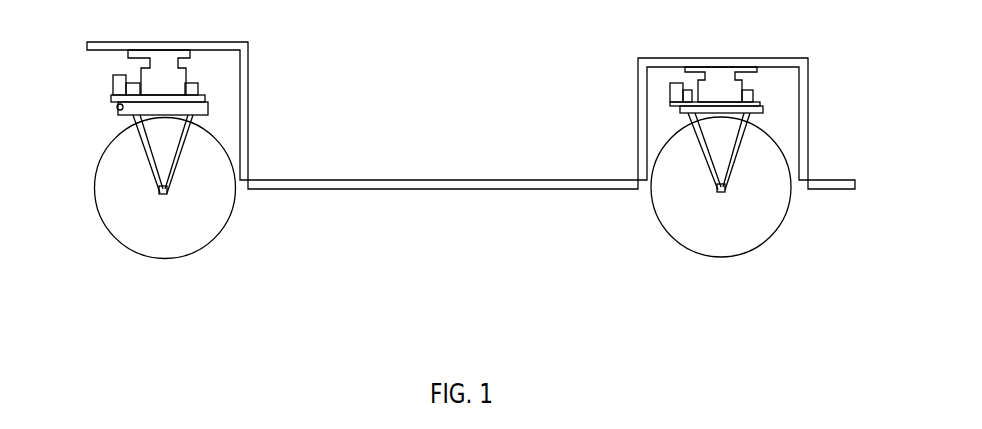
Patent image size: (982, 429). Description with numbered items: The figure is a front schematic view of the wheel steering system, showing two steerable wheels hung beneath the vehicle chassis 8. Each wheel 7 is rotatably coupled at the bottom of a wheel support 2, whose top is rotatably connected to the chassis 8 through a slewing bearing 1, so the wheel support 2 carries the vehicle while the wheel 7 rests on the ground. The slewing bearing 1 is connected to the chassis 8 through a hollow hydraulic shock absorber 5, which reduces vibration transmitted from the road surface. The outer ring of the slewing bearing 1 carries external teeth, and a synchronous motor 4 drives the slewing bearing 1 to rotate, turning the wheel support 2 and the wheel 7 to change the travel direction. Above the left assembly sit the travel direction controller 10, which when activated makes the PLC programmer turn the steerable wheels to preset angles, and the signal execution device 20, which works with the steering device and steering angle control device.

The slewing bearing 1 is at (461, 196).
The wheel support 2 is at (163, 138).
The synchronous motor 4 is at (670, 103).
The hollow hydraulic shock absorber 5 is at (259, 163).
The wheel 7 is at (145, 228).
The chassis 8 is at (373, 183).
The travel direction controller 10 is at (198, 88).
The signal execution device 20 is at (142, 82).